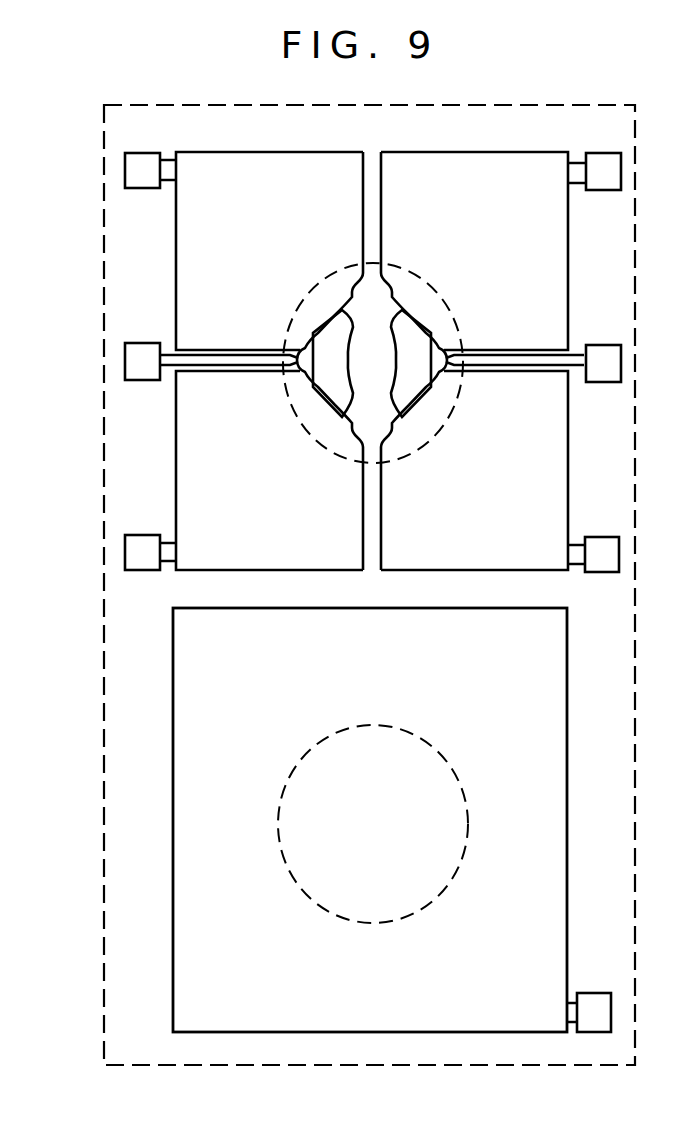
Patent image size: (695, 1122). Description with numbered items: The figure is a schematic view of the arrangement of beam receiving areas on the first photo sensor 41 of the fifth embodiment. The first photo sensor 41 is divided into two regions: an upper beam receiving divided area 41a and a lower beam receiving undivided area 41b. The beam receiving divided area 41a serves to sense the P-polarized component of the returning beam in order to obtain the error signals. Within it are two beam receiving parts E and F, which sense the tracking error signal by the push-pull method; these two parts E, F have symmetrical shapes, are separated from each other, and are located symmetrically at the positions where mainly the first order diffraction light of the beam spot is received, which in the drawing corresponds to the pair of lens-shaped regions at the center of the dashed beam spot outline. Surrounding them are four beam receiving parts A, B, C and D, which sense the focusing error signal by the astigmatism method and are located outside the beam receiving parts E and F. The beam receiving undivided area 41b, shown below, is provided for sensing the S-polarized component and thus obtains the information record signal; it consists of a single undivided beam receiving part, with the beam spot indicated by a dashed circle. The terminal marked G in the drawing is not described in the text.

The first photo sensor 41 is at (103, 676).
The beam receiving divided area 41a is at (332, 362).
The beam receiving undivided area 41b is at (320, 820).
The beam receiving part A is at (595, 171).
The beam receiving part B is at (150, 170).
The beam receiving part C is at (150, 552).
The beam receiving part D is at (593, 554).
The beam receiving part E is at (142, 361).
The beam receiving part F is at (603, 363).
The terminal G is at (589, 1012).